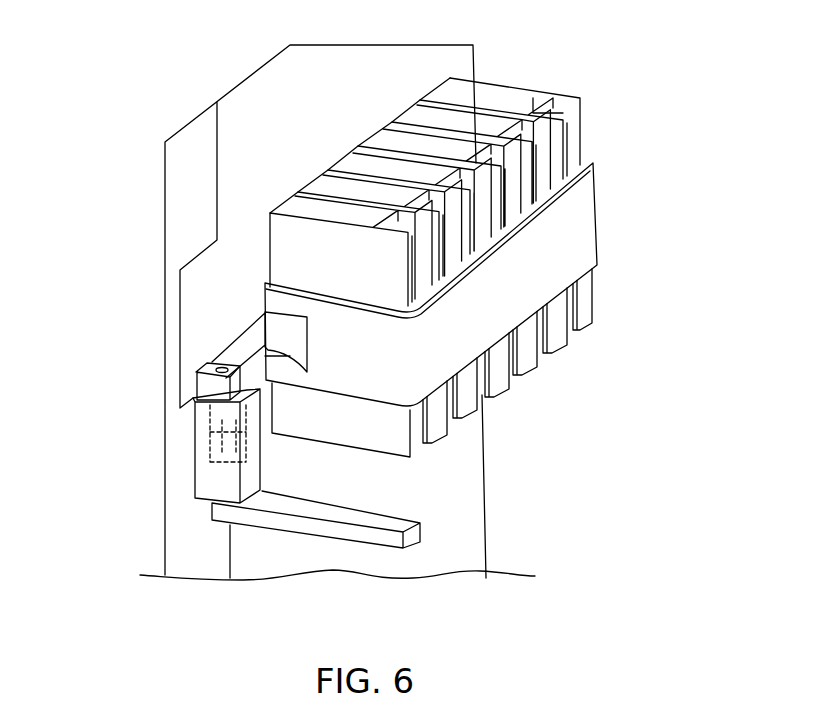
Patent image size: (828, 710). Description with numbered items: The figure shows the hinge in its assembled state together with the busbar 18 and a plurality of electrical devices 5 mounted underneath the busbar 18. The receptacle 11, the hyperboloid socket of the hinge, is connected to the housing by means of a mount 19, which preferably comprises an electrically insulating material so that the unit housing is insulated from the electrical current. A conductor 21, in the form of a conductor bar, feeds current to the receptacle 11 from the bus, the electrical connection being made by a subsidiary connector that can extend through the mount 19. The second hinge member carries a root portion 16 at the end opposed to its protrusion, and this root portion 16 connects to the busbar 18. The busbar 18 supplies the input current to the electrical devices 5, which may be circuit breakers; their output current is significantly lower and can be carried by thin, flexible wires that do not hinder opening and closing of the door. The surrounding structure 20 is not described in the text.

The electrical devices 5 is at (478, 101).
The busbar 18 is at (590, 213).
The housing wall 20 is at (195, 318).
The root portion 16 is at (215, 390).
The receptacle 11 is at (215, 428).
The mount 19 is at (217, 487).
The conductor 21 is at (388, 515).